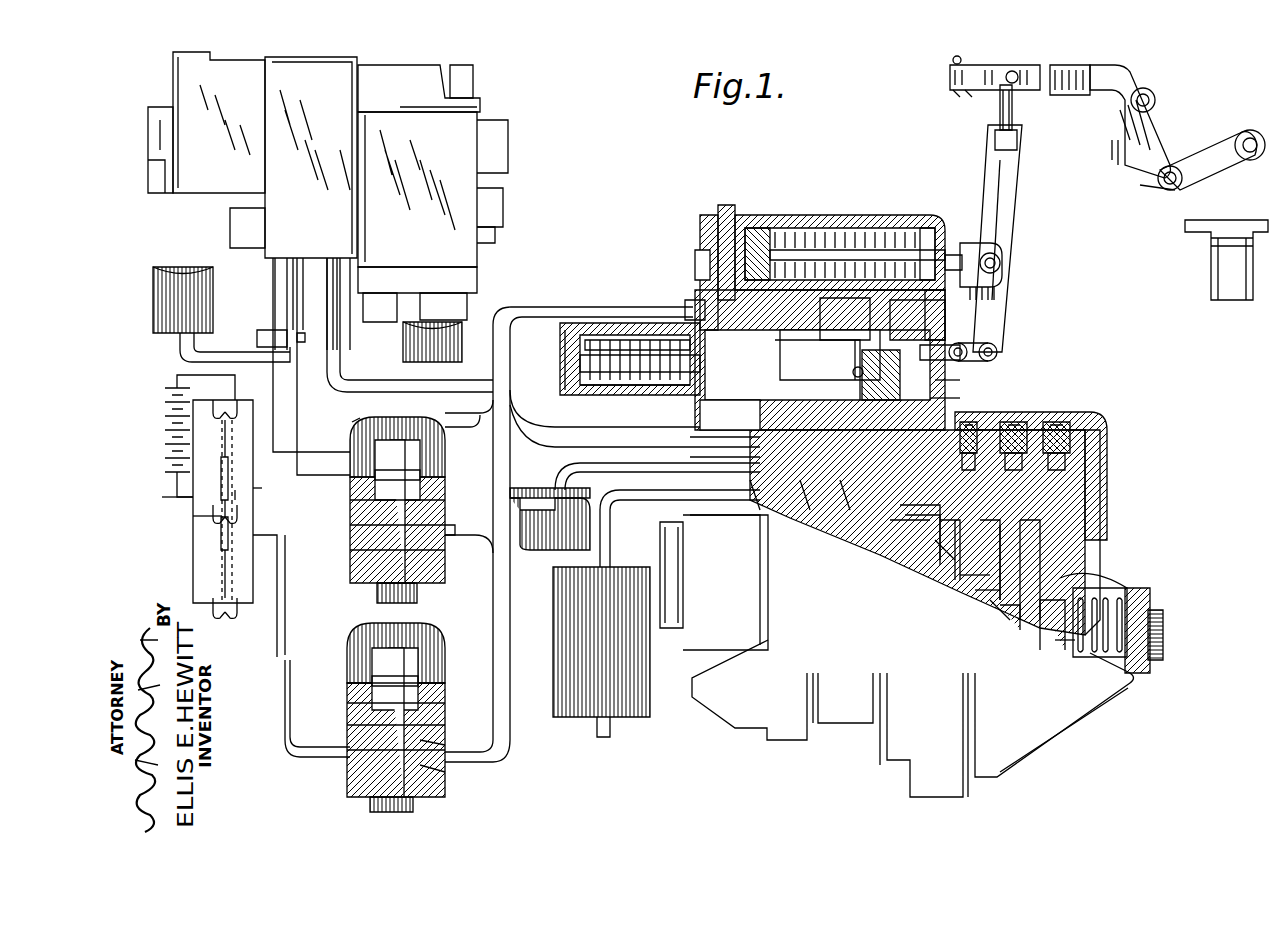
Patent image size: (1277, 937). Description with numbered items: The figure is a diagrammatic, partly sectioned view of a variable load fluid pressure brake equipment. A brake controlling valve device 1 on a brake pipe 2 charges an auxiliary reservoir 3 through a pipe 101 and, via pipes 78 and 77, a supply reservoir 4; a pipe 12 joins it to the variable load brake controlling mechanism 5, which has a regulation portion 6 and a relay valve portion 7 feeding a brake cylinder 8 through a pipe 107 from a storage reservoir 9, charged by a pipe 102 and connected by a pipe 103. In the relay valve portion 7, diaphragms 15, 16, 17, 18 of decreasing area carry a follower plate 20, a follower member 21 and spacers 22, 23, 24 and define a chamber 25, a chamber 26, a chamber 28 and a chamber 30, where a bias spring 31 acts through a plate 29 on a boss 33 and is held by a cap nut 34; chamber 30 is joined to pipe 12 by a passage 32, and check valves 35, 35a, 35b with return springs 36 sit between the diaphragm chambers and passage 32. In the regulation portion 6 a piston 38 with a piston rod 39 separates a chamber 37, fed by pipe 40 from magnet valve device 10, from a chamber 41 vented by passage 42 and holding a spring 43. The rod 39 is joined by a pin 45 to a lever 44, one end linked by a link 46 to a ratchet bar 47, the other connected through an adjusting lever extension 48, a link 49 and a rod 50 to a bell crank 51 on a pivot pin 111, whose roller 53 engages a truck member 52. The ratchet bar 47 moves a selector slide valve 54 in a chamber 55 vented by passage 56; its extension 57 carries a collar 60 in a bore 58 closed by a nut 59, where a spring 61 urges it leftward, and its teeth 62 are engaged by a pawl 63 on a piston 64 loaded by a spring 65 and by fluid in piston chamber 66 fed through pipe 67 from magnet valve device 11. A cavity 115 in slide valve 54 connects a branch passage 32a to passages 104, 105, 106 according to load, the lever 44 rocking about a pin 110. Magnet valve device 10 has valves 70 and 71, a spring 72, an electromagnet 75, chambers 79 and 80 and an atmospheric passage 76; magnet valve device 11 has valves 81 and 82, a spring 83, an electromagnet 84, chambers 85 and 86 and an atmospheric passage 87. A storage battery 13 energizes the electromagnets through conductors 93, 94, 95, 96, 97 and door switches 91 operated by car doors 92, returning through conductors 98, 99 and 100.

The brake controlling valve device 1 is at (505, 140).
The brake pipe 2 is at (262, 333).
The auxiliary reservoir 3 is at (445, 330).
The supply reservoir 4 is at (165, 268).
The variable load brake controlling mechanism 5 is at (735, 730).
The regulation portion 6 is at (810, 225).
The relay valve portion 7 is at (1105, 462).
The brake cylinder 8 is at (530, 540).
The storage reservoir 9 is at (553, 647).
The magnet valve device 10 is at (395, 418).
The magnet valve device 11 is at (350, 637).
The pipe 12 is at (335, 372).
The storage battery 13 is at (163, 415).
The flexible diaphragm 15 is at (950, 570).
The flexible diaphragm 16 is at (990, 602).
The flexible diaphragm 17 is at (1035, 618).
The flexible diaphragm 18 is at (1060, 645).
The follower plate 20 is at (905, 545).
The follower member 21 is at (960, 580).
The spacer 22 is at (975, 595).
The spacer 23 is at (1000, 610).
The spacer 24 is at (1045, 630).
The chamber 25 is at (900, 527).
The chamber 26 is at (935, 550).
The chamber 28 is at (1010, 615).
The plate 29 is at (1110, 595).
The chamber 30 is at (1125, 600).
The bias spring 31 is at (1150, 605).
The passage 32 is at (1090, 512).
The branch passage 32a is at (690, 405).
The boss 33 is at (1085, 648).
The cap nut 34 is at (1163, 655).
The check valve 35 is at (1005, 425).
The check valve 35a is at (1030, 425).
The check valve 35b is at (1068, 425).
The return spring 36 is at (972, 420).
The chamber 37 is at (705, 285).
The piston 38 is at (738, 225).
The piston rod 39 is at (860, 228).
The passage and pipe 40 is at (655, 318).
The chamber 41 is at (900, 228).
The passage 42 is at (932, 228).
The spring 43 is at (778, 228).
The lever 44 is at (1000, 215).
The pin 45 is at (1005, 262).
The link 46 is at (975, 352).
The ratchet bar 47 is at (935, 335).
The adjusting lever extension 48 is at (1015, 113).
The link 49 is at (1003, 90).
The rod 50 is at (1070, 95).
The bell crank 51 is at (1165, 125).
The member 52 is at (1230, 228).
The roller 53 is at (1252, 165).
The selector slide valve 54 is at (625, 385).
The chamber 55 is at (830, 350).
The passage 56 is at (860, 355).
The extension 57 is at (620, 335).
The bore 58 is at (600, 335).
The nut 59 is at (565, 350).
The collar 60 is at (565, 365).
The spring 61 is at (590, 385).
The teeth 62 is at (895, 350).
The pawl 63 is at (935, 384).
The piston 64 is at (935, 400).
The spring 65 is at (855, 390).
The piston chamber 66 is at (978, 425).
The passage and pipe 67 is at (740, 430).
The valve 70 is at (350, 505).
The valve 71 is at (350, 530).
The spring 72 is at (375, 590).
The electromagnet 75 is at (348, 418).
The atmospheric passage 76 is at (352, 555).
The pipe 77 is at (218, 365).
The pipe 78 is at (297, 405).
The chamber 79 is at (372, 475).
The chamber 80 is at (445, 540).
The valve 81 is at (350, 700).
The valve 82 is at (350, 720).
The spring 83 is at (352, 750).
The electromagnet 84 is at (410, 632).
The chamber 85 is at (445, 772).
The chamber 86 is at (445, 745).
The atmospheric passage 87 is at (350, 690).
The door switches 91 is at (226, 425).
The car doors 92 is at (228, 465).
The conductor 93 is at (300, 452).
The conductor 94 is at (462, 630).
The conductor 95 is at (262, 670).
The conductor 96 is at (253, 488).
The conductor 97 is at (237, 507).
The conductor 98 is at (185, 497).
The conductor 99 is at (193, 527).
The conductor 100 is at (203, 500).
The pipe 101 is at (355, 300).
The pipe 102 is at (610, 735).
The pipe 103 is at (630, 500).
The passage 104 is at (775, 510).
The passage 105 is at (805, 505).
The passage 106 is at (840, 505).
The pipe 107 is at (555, 467).
The pin 110 is at (998, 352).
The pivot pin 111 is at (1165, 190).
The cavity 115 is at (827, 365).